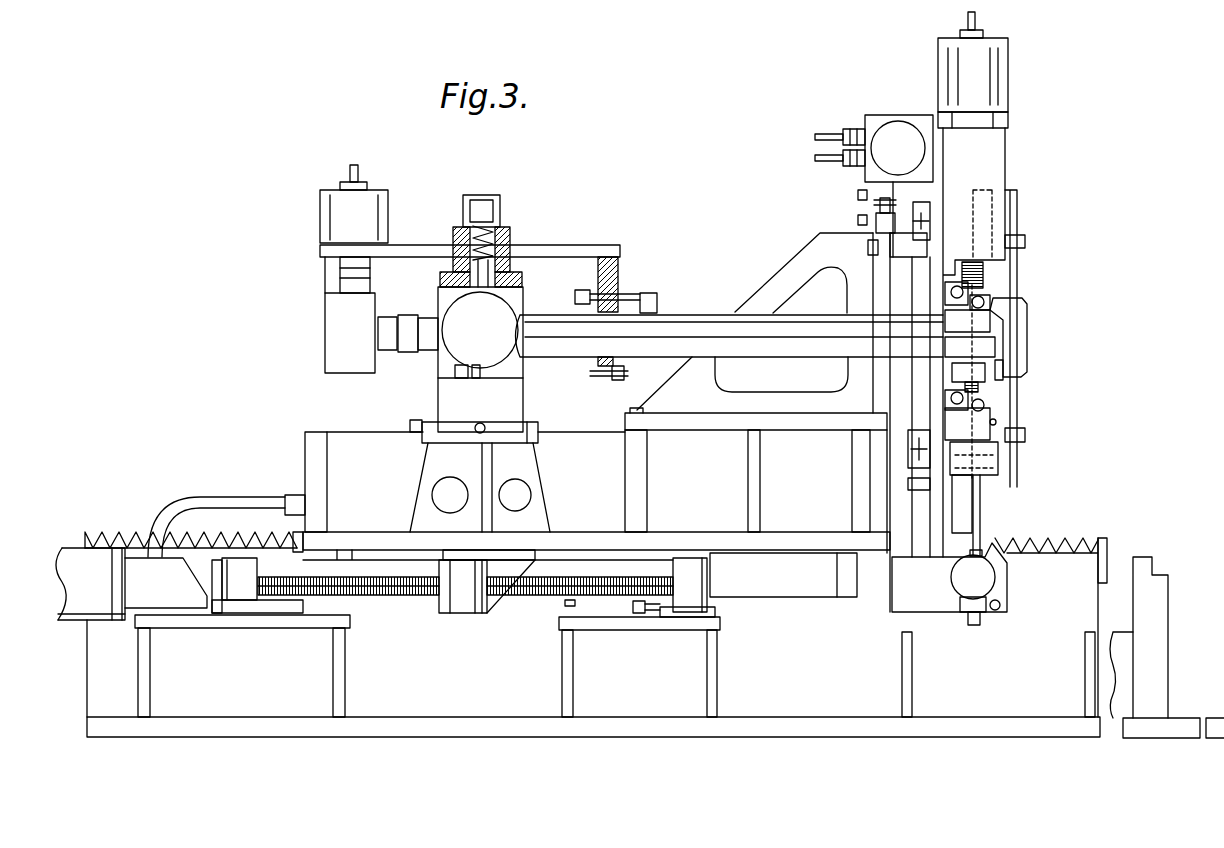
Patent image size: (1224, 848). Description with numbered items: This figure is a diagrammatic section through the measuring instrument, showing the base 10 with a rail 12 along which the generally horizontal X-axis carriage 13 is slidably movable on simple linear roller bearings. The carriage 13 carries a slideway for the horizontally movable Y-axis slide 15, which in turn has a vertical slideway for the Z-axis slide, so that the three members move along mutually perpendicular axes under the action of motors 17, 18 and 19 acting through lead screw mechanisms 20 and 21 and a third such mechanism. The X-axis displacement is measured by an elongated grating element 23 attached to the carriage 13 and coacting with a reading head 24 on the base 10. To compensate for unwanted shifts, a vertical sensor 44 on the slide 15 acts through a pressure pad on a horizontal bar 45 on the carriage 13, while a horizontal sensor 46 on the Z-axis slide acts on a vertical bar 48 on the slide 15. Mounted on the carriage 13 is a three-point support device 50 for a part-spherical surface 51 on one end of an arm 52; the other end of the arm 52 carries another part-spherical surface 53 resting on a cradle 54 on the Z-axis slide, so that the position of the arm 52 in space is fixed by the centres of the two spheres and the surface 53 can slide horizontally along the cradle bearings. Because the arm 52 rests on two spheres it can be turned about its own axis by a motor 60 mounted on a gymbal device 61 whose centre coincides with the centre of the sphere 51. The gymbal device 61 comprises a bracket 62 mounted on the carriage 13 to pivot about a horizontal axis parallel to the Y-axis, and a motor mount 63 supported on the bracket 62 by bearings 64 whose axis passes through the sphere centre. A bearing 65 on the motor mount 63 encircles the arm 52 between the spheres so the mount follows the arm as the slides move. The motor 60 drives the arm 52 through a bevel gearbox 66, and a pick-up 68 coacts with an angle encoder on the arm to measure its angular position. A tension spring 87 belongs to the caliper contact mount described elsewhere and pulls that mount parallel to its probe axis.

The base 10 is at (743, 720).
The rail 12 is at (1057, 570).
The X-axis carriage 13 is at (348, 532).
The Y-axis slide 15 is at (935, 218).
The motor 17 is at (87, 558).
The motor 18 is at (905, 248).
The motor 19 is at (992, 72).
The lead screw mechanism 20 is at (428, 610).
The lead screw mechanism 21 is at (984, 317).
The elongated grating element 23 is at (773, 582).
The reading head 24 is at (573, 603).
The vertical sensor 44 is at (975, 508).
The horizontal bar 45 is at (978, 565).
The horizontal sensor 46 is at (1002, 420).
The vertical bar 48 is at (1007, 227).
The three-point support device 50 is at (448, 382).
The part-spherical surface 51 is at (493, 370).
The arm 52 is at (533, 325).
The part-spherical surface 53 is at (1003, 342).
The cradle 54 is at (1006, 383).
The motor 60 is at (365, 205).
The gymbal device 61 is at (423, 252).
The bracket 62 is at (518, 292).
The motor mount 63 is at (535, 250).
The bearings 64 is at (510, 257).
The bearing 65 is at (597, 358).
The bevel gearbox 66 is at (353, 325).
The pick-up 68 is at (575, 291).
The tension spring 87 is at (647, 291).